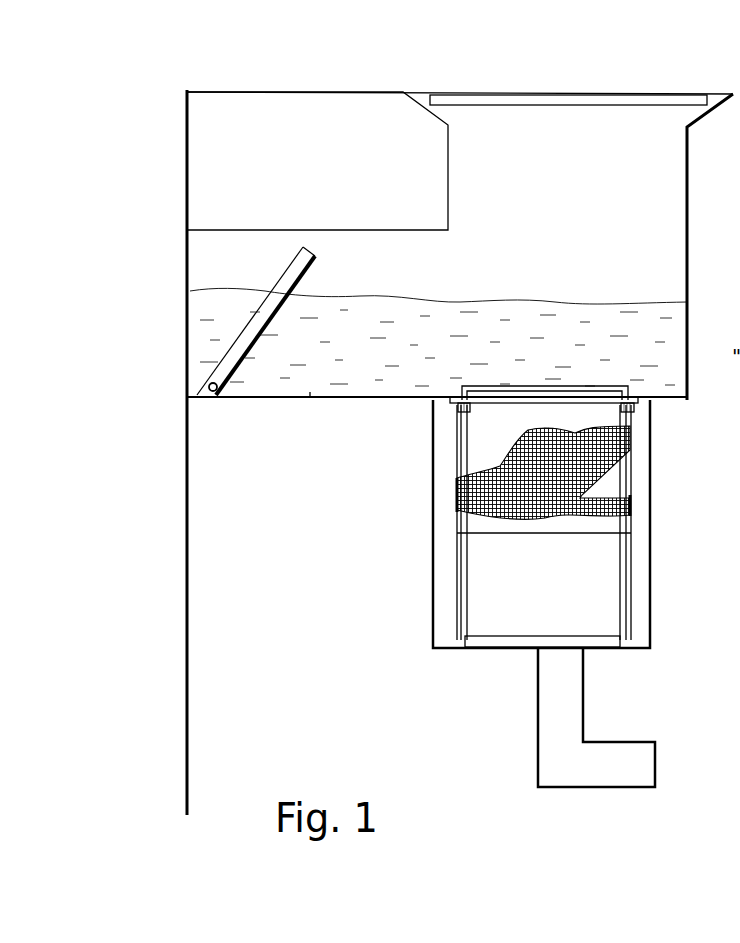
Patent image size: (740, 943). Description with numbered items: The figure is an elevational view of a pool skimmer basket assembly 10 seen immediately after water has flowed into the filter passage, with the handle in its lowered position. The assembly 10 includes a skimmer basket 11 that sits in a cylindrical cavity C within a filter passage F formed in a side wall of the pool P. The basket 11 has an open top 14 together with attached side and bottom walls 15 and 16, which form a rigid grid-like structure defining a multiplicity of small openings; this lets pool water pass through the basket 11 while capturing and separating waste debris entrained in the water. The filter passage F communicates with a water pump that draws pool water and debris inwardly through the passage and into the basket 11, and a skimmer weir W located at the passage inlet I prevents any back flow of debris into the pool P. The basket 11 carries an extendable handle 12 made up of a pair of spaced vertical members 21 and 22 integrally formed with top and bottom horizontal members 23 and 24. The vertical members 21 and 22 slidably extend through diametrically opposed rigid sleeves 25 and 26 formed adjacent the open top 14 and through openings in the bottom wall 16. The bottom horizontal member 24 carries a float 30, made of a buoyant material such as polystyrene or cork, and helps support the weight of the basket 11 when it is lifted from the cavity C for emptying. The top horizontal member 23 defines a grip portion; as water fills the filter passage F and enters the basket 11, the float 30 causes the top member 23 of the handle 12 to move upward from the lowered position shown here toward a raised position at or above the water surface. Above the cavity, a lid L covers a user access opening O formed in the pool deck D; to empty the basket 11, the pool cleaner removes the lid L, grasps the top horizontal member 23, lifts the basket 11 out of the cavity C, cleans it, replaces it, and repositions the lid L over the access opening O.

The pool skimmer basket assembly 10 is at (587, 561).
The skimmer basket 11 is at (612, 479).
The extendable handle 12 is at (606, 384).
The open top 14 is at (184, 683).
The side wall 15 is at (458, 495).
The bottom wall 16 is at (613, 537).
The vertical member 21 is at (458, 597).
The vertical member 22 is at (623, 605).
The top horizontal member 23 is at (532, 386).
The bottom horizontal member 24 is at (620, 650).
The sleeve 25 is at (455, 405).
The sleeve 26 is at (636, 408).
The float 30 is at (527, 655).
The pool P is at (152, 208).
The pool deck D is at (368, 92).
The lid L is at (592, 97).
The user access opening O is at (685, 155).
The skimmer weir W is at (186, 382).
The passage inlet I is at (187, 393).
The filter passage F is at (340, 398).
The cylindrical cavity C is at (440, 560).